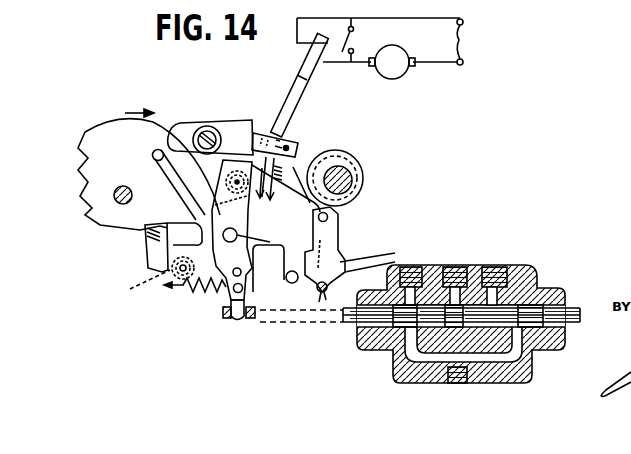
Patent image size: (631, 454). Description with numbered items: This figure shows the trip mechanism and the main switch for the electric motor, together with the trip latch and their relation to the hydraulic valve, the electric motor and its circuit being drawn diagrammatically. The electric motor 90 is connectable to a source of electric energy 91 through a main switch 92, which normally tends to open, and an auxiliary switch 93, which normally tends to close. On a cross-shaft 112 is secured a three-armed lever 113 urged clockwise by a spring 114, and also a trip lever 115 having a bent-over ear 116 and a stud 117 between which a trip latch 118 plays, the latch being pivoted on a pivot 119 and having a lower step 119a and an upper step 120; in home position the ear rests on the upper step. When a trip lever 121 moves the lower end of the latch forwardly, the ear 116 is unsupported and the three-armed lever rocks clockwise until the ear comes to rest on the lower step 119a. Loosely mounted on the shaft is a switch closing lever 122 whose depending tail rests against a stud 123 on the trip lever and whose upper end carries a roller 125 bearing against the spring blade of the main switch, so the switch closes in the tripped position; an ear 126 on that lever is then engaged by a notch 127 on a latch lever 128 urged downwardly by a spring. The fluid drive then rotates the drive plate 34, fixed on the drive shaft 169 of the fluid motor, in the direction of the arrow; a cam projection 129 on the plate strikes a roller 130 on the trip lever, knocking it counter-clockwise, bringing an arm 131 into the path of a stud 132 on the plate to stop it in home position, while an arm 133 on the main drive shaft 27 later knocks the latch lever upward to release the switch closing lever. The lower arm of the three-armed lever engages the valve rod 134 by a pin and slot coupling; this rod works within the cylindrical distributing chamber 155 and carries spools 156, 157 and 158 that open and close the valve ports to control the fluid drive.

The main drive shaft 27 is at (365, 163).
The drive plate 34 is at (106, 126).
The electric motor 90 is at (403, 75).
The source of electric energy 91 is at (460, 39).
The main switch 92 is at (292, 86).
The auxiliary switch 93 is at (352, 42).
The cross-shaft 112 is at (262, 203).
The three-armed lever 113 is at (148, 243).
The spring 114 is at (186, 290).
The trip lever 115 is at (282, 247).
The bent-over ear 116 is at (347, 232).
The stud 117 is at (293, 282).
The trip latch 118 is at (342, 276).
The pivot 119 is at (366, 200).
The lower step 119a is at (372, 258).
The upper step 120 is at (342, 250).
The trip lever 121 is at (320, 300).
The switch closing lever 122 is at (213, 215).
The stud 123 is at (230, 306).
The roller 125 is at (176, 113).
The ear 126 is at (270, 128).
The notch 127 is at (277, 128).
The latch lever 128 is at (227, 124).
The cam projection 129 is at (155, 262).
The roller 130 is at (140, 286).
The arm 131 is at (168, 173).
The stud 132 is at (158, 149).
The arm 133 is at (226, 319).
The valve rod 134 is at (353, 320).
The cylindrical distributing chamber 155 is at (512, 303).
The spool 156 is at (528, 320).
The spool 157 is at (455, 322).
The spool 158 is at (400, 328).
The drive shaft 169 is at (130, 191).